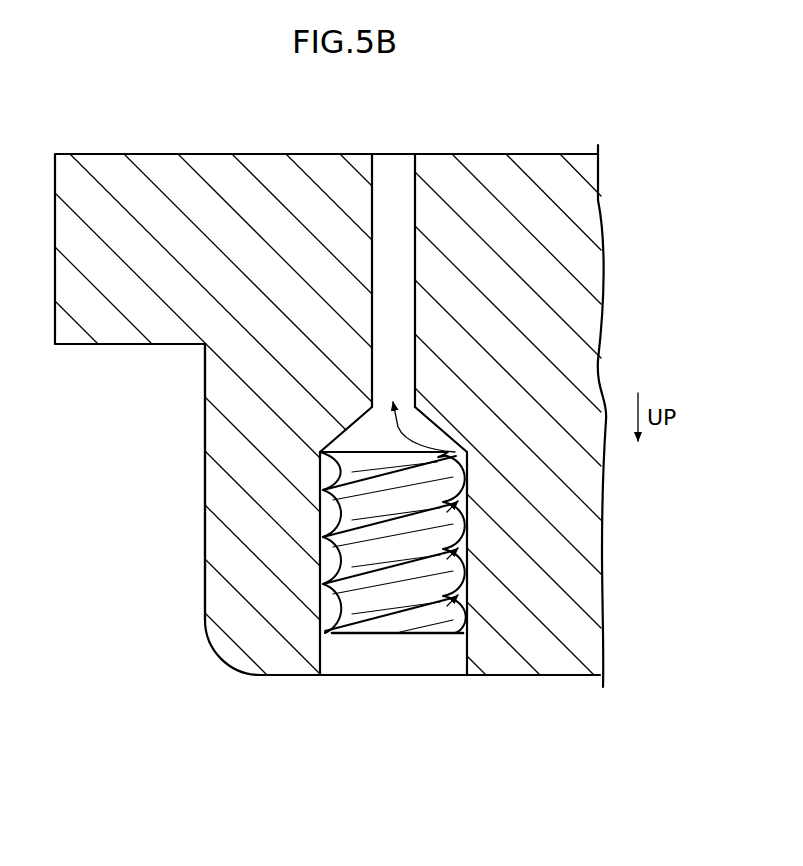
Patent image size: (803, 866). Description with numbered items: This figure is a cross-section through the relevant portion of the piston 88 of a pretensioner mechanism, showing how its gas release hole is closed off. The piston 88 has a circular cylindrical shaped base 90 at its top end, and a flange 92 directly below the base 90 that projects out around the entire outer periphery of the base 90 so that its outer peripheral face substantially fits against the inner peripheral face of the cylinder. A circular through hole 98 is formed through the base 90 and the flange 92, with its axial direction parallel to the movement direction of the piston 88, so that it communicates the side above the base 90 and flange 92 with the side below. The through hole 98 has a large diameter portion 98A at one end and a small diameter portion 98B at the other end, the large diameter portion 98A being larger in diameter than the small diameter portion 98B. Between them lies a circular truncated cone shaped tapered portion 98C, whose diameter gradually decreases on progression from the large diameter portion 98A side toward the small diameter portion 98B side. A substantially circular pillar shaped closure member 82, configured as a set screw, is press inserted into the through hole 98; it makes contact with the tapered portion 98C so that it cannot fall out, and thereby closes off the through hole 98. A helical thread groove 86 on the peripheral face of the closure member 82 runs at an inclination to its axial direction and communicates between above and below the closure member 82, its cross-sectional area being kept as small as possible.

The piston 88 is at (188, 150).
The small diameter portion 98B is at (371, 177).
The flange 92 is at (90, 345).
The tapered portion 98C is at (333, 440).
The base 90 is at (204, 495).
The thread groove 86 is at (322, 572).
The through hole 98 is at (320, 650).
The closure member 82 is at (394, 634).
The large diameter portion 98A is at (467, 648).